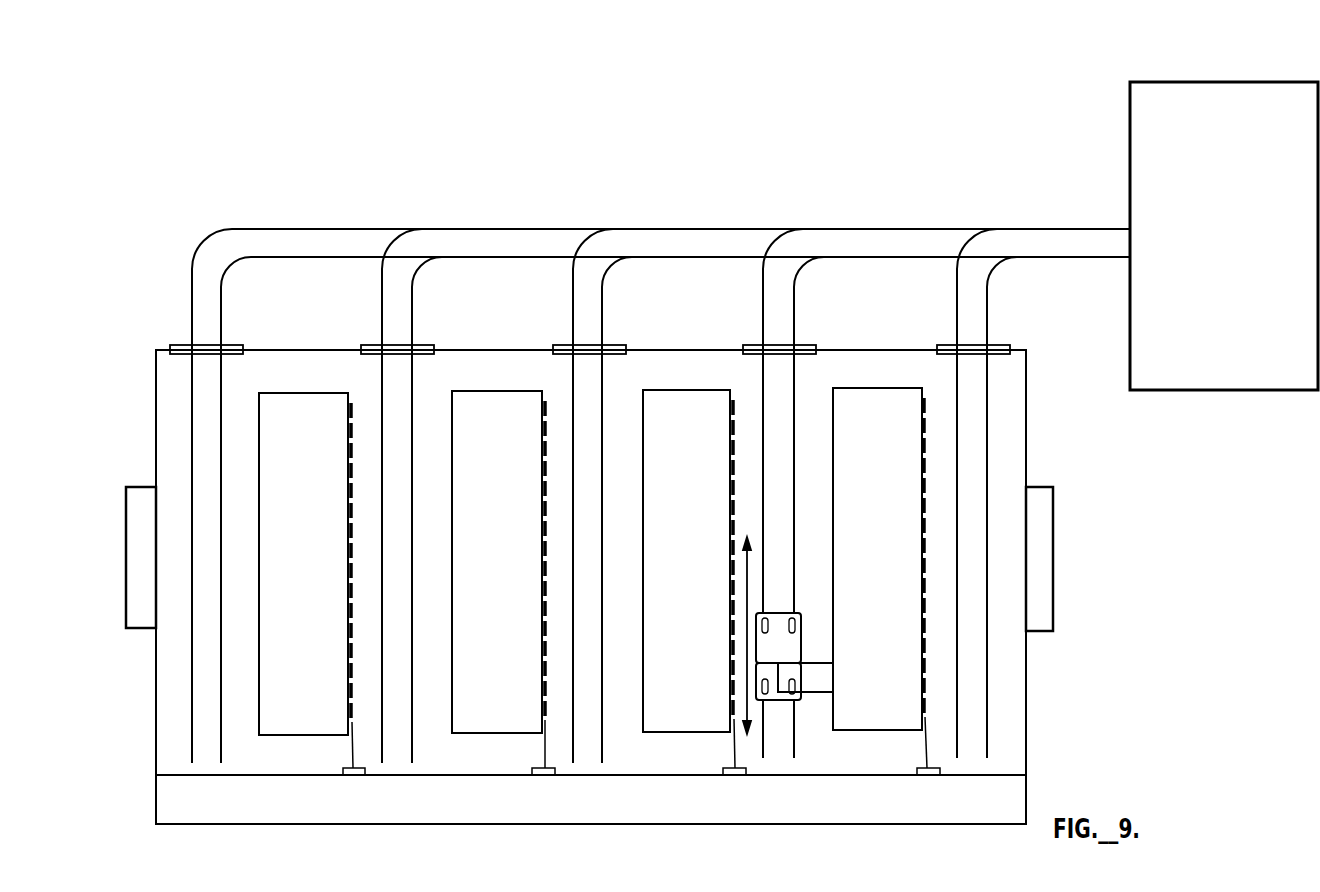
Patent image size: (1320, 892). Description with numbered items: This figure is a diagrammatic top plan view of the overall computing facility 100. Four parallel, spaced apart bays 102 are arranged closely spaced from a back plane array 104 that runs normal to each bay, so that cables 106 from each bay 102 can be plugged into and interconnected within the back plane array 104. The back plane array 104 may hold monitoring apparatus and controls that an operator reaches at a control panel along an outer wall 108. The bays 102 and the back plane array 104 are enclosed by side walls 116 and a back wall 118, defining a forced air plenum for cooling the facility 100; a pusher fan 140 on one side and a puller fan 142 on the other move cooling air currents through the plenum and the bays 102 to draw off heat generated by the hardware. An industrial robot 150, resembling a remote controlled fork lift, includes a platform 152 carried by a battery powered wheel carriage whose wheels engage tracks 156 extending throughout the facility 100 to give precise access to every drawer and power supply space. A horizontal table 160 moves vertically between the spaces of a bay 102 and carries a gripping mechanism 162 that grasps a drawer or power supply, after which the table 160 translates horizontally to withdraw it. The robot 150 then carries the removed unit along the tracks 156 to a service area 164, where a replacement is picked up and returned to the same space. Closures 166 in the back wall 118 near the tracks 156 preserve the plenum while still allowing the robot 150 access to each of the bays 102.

The computing facility 100 is at (1085, 683).
The bay 102 is at (318, 551).
The back plane array 104 is at (528, 814).
The cables 106 is at (353, 753).
The outer wall 108 is at (638, 824).
The side walls 116 is at (155, 390).
The back wall 118 is at (482, 347).
The pusher fan 140 is at (145, 486).
The puller fan 142 is at (1036, 498).
The industrial robot 150 is at (806, 673).
The platform 152 is at (778, 620).
The tracks 156 is at (311, 257).
The horizontal table 160 is at (773, 695).
The gripping mechanism 162 is at (772, 644).
The service area 164 is at (1230, 253).
The closures 166 is at (226, 345).